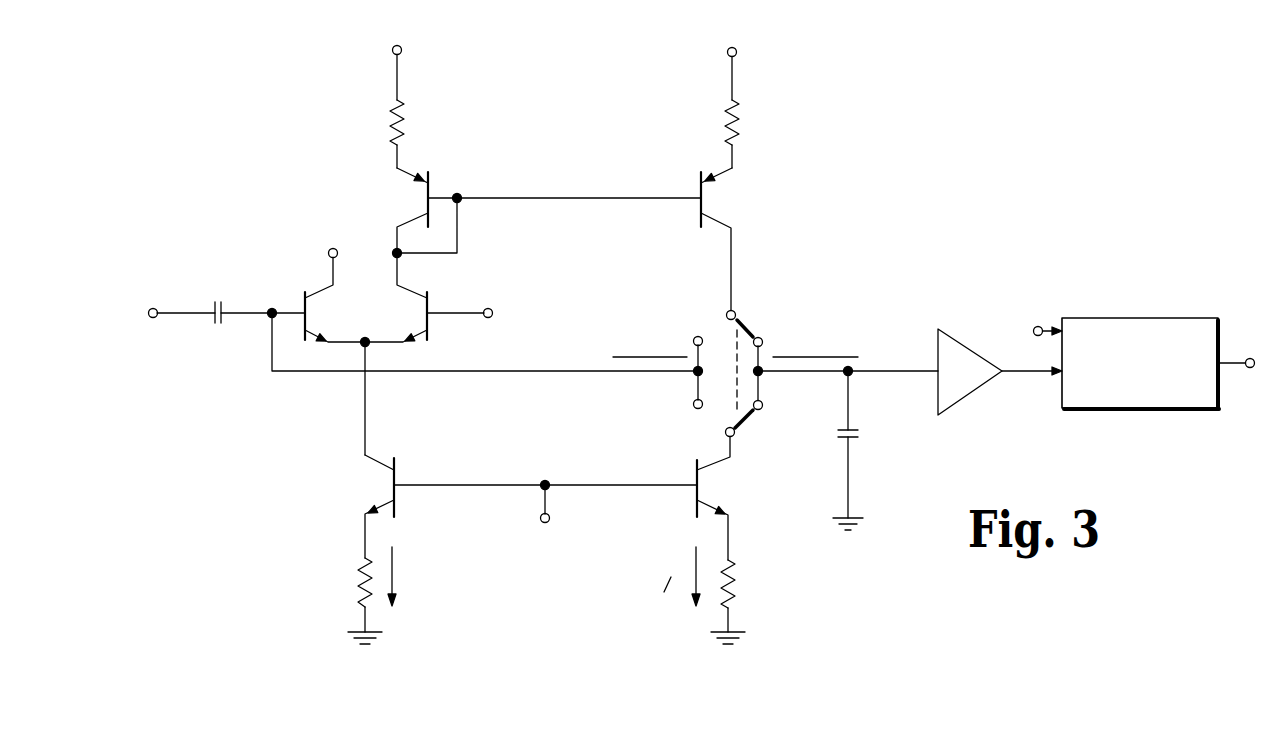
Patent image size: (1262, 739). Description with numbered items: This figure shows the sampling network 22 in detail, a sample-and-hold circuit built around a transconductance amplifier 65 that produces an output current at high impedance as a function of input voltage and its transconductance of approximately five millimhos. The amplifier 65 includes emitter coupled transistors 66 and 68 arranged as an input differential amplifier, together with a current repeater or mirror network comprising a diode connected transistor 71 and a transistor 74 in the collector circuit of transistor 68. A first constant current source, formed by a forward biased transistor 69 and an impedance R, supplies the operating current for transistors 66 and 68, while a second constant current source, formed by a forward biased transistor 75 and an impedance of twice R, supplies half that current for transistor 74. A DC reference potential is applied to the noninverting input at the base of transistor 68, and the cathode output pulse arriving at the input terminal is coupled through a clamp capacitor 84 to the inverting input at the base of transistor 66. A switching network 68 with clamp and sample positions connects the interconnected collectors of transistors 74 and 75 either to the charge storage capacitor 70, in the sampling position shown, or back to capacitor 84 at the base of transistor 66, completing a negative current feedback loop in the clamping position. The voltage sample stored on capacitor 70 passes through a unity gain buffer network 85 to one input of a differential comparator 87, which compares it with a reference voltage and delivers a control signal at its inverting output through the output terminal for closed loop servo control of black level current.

The sampling network 22 is at (833, 640).
The transconductance amplifier 65 is at (563, 125).
The transistor 66 is at (345, 325).
The transistor / switching network 68 is at (408, 325).
The transistor 69 is at (375, 497).
The charge storage capacitor 70 is at (858, 433).
The diode connected transistor 71 is at (410, 213).
The transistor 74 is at (742, 213).
The transistor 75 is at (735, 500).
The clamp capacitor 84 is at (221, 323).
The unity gain buffer network 85 is at (937, 349).
The differential comparator 87 is at (1190, 409).